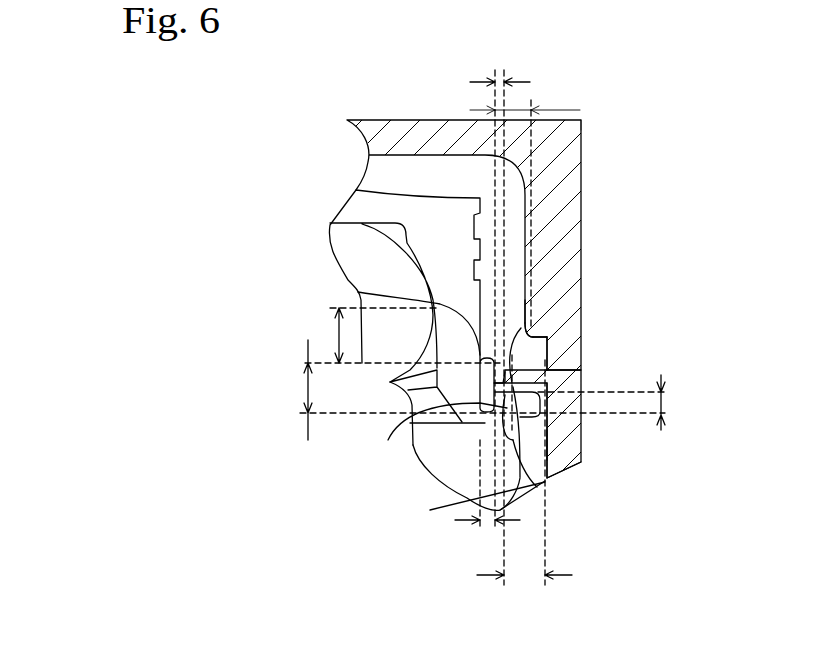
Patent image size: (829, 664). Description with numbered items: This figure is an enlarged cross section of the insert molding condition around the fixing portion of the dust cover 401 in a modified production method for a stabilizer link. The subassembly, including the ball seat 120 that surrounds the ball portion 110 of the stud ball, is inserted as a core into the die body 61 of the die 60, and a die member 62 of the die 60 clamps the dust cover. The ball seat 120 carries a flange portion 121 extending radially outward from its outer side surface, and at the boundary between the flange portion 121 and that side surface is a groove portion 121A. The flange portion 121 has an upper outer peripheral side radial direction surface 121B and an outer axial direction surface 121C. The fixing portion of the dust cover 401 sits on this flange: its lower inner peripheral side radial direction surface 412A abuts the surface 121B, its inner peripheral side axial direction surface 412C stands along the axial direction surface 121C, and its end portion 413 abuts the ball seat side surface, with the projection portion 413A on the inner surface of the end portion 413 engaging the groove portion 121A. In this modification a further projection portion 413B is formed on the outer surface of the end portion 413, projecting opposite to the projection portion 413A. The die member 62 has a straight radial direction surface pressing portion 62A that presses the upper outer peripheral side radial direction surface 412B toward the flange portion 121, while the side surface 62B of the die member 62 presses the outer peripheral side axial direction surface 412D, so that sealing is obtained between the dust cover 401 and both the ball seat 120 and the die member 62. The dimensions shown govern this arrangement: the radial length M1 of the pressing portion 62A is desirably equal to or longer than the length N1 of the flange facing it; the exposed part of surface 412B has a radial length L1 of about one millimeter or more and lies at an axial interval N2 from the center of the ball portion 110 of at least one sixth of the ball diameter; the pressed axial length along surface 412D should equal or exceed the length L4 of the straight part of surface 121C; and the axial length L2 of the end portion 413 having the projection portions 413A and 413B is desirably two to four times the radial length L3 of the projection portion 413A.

The die 60 is at (620, 118).
The die body 61 is at (568, 173).
The die member 62 is at (583, 470).
The radial direction surface pressing portion 62A is at (560, 330).
The side surface 62B is at (582, 373).
The ball portion 110 is at (338, 243).
The ball seat 120 is at (352, 207).
The flange portion 121 is at (537, 487).
The groove portion 121A is at (520, 430).
The outer peripheral side radial direction surface 121B is at (543, 487).
The axial direction surface 121C is at (582, 453).
The dust cover 401 is at (448, 470).
The inner peripheral side radial direction surface 412A is at (555, 356).
The outer peripheral side radial direction surface 412B is at (555, 322).
The inner peripheral side axial direction surface 412C is at (545, 415).
The outer peripheral side axial direction surface 412D is at (560, 370).
The end portion 413 is at (487, 393).
The projection portion 413A is at (485, 425).
The projection portion 413B is at (358, 292).
The radial direction length L1 is at (500, 315).
The axial direction length L2 is at (471, 390).
The radial direction length L3 is at (487, 500).
The length L4 is at (618, 402).
The radial direction length M1 is at (524, 484).
The length N1 is at (526, 257).
The interval N2 is at (402, 335).